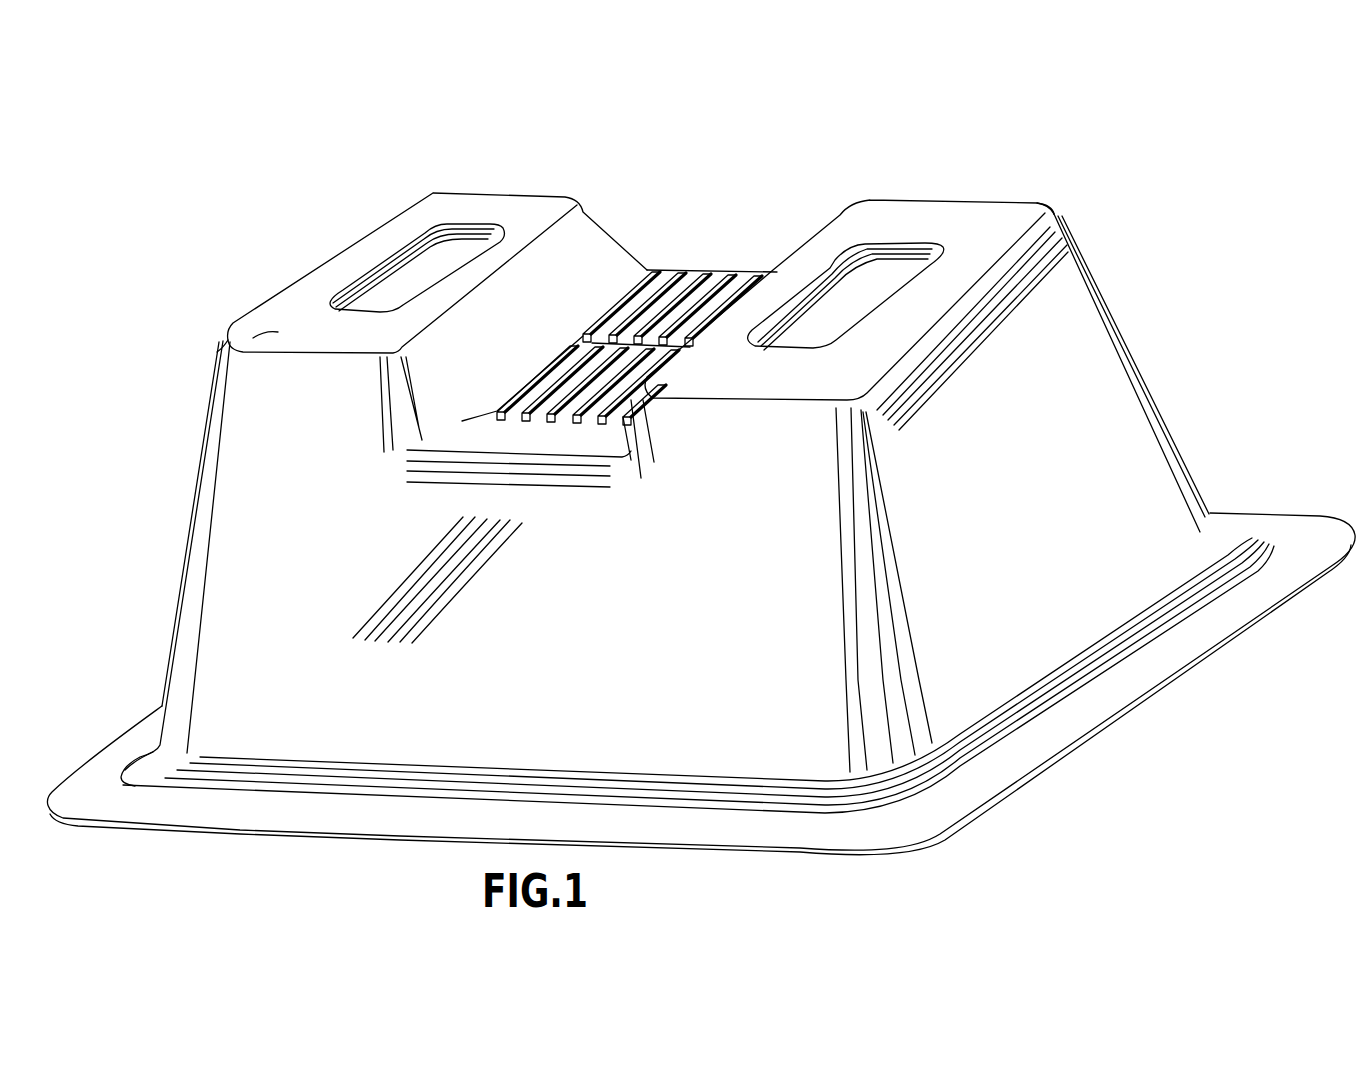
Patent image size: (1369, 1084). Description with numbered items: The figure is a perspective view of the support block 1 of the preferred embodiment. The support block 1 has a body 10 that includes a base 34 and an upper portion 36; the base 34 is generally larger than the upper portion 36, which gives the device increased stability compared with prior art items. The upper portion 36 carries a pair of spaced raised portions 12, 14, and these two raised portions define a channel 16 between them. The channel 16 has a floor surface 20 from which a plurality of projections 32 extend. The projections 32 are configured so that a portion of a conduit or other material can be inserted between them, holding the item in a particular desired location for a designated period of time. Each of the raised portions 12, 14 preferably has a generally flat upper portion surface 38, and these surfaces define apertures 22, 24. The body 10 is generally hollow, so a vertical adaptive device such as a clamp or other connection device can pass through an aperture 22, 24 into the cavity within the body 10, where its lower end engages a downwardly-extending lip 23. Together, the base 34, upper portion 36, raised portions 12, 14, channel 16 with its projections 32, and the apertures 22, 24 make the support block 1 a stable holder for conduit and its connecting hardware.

The support block 1 is at (256, 130).
The body 10 is at (229, 518).
The raised portion 12 is at (277, 313).
The raised portion 14 is at (1060, 222).
The channel 16 is at (564, 432).
The floor surface 20 is at (472, 447).
The aperture 22 is at (399, 279).
The downwardly-extending lip 23 is at (422, 252).
The aperture 24 is at (870, 289).
The projections 32 is at (686, 276).
The base 34 is at (957, 798).
The upper portion 36 is at (1033, 445).
The upper portion surface 38 is at (218, 372).